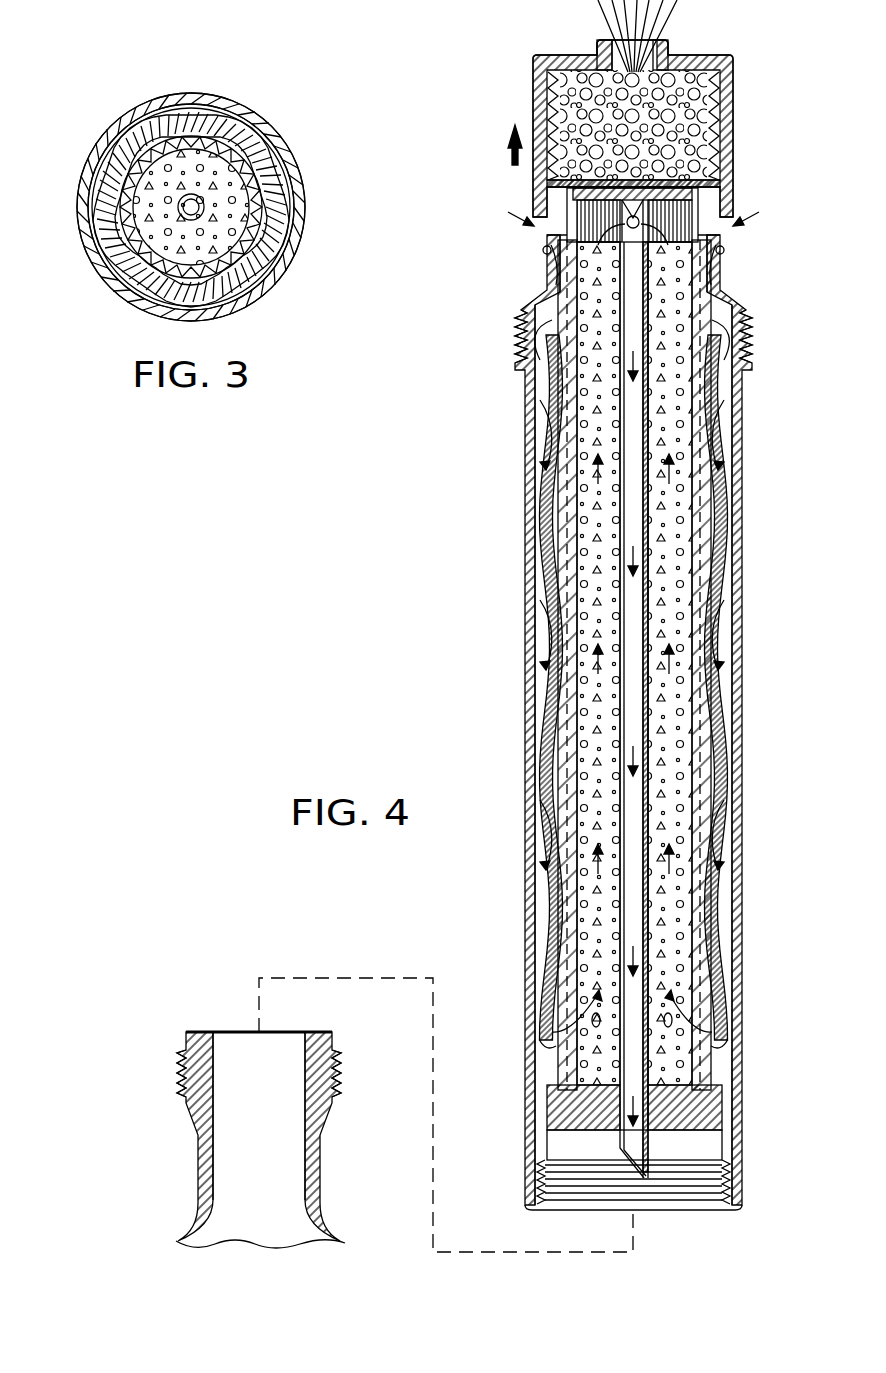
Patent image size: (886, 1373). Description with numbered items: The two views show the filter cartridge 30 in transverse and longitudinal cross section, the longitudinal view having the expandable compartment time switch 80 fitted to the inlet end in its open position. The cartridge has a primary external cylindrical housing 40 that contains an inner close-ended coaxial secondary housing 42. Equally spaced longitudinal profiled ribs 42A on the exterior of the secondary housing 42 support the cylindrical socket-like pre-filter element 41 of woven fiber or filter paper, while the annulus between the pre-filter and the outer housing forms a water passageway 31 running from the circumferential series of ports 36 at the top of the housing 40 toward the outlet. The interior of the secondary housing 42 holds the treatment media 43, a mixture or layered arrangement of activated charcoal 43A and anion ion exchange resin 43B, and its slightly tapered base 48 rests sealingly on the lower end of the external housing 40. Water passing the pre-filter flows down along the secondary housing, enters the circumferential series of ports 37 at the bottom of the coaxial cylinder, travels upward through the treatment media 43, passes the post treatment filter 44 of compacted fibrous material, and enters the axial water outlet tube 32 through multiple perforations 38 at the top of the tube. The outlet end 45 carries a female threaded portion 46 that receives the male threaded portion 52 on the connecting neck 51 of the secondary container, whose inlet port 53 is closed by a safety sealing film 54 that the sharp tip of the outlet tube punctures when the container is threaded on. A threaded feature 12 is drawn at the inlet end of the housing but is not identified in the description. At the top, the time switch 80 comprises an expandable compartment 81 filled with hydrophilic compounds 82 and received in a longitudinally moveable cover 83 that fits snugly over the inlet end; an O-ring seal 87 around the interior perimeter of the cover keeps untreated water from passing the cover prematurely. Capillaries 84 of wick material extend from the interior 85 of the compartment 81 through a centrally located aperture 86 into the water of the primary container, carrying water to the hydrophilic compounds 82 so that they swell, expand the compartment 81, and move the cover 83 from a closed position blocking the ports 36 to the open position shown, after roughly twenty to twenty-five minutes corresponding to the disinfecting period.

In FIG. 4, the threaded connection 12 is at (745, 325).
In FIG. 3, the filter cartridge 30 is at (250, 90).
In FIG. 4, the filter cartridge 30 is at (482, 443).
In FIG. 3, the water passageway 31 is at (127, 285).
In FIG. 4, the water passageway 31 is at (727, 540).
In FIG. 3, the axial water outlet tube 32 is at (293, 157).
In FIG. 4, the axial water outlet tube 32 is at (648, 435).
In FIG. 4, the circumferential series of ports 36 is at (550, 230).
In FIG. 4, the circumferential series of ports 37 is at (690, 1032).
In FIG. 4, the multiple perforations 38 is at (567, 203).
In FIG. 3, the primary external cylindrical housing 40 is at (127, 113).
In FIG. 4, the primary external cylindrical housing 40 is at (743, 500).
In FIG. 3, the pre-filter element 41 is at (97, 182).
In FIG. 3, the coaxial secondary housing 42 is at (95, 217).
In FIG. 4, the coaxial secondary housing 42 is at (712, 583).
In FIG. 3, the longitudinal profiled ribs 42A is at (117, 265).
In FIG. 3, the treatment media 43 is at (187, 173).
In FIG. 4, the treatment media 43 is at (717, 710).
In FIG. 3, the activated charcoal 43A is at (213, 247).
In FIG. 3, the anion ion exchange resin 43B is at (264, 291).
In FIG. 4, the post treatment filter 44 is at (627, 213).
In FIG. 4, the outlet end 45 is at (720, 1183).
In FIG. 4, the female threaded portion 46 is at (647, 1150).
In FIG. 4, the tapered base 48 is at (687, 1113).
In FIG. 4, the connecting neck 51 is at (320, 1180).
In FIG. 4, the male threaded portion 52 is at (340, 1060).
In FIG. 4, the inlet port 53 is at (253, 1067).
In FIG. 4, the safety sealing film 54 is at (222, 1030).
In FIG. 4, the expandable compartment time switch 80 is at (520, 100).
In FIG. 4, the expandable compartment 81 is at (735, 118).
In FIG. 4, the hydrophilic compounds 82 is at (733, 182).
In FIG. 4, the moveable cover 83 is at (733, 85).
In FIG. 4, the capillaries 84 is at (600, 8).
In FIG. 4, the interior 85 is at (668, 153).
In FIG. 4, the centrally located aperture 86 is at (653, 38).
In FIG. 4, the O-ring seal 87 is at (722, 250).